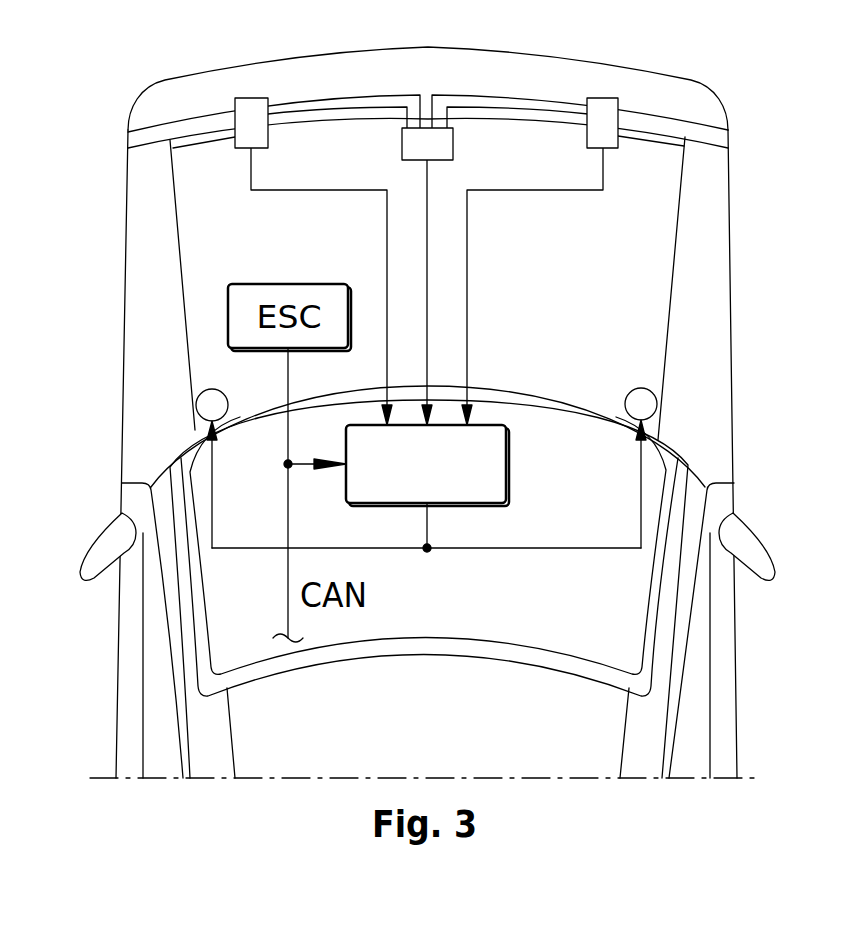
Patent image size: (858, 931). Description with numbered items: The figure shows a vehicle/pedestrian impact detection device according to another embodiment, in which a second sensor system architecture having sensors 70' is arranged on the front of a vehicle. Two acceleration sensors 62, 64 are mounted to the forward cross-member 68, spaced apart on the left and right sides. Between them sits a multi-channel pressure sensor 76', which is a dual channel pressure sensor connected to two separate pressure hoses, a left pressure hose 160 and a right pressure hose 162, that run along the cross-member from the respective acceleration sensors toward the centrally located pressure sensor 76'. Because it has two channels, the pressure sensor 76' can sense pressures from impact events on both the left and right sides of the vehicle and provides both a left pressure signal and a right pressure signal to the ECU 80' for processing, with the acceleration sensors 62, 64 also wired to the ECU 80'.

The sensors 70' is at (428, 74).
The acceleration sensor 62 is at (253, 98).
The acceleration sensor 64 is at (607, 98).
The left pressure hose 160 is at (393, 100).
The right pressure hose 162 is at (457, 100).
The multi-channel pressure sensor 76' is at (384, 276).
The forward cross-member 68 is at (547, 118).
The ECU 80' is at (460, 431).